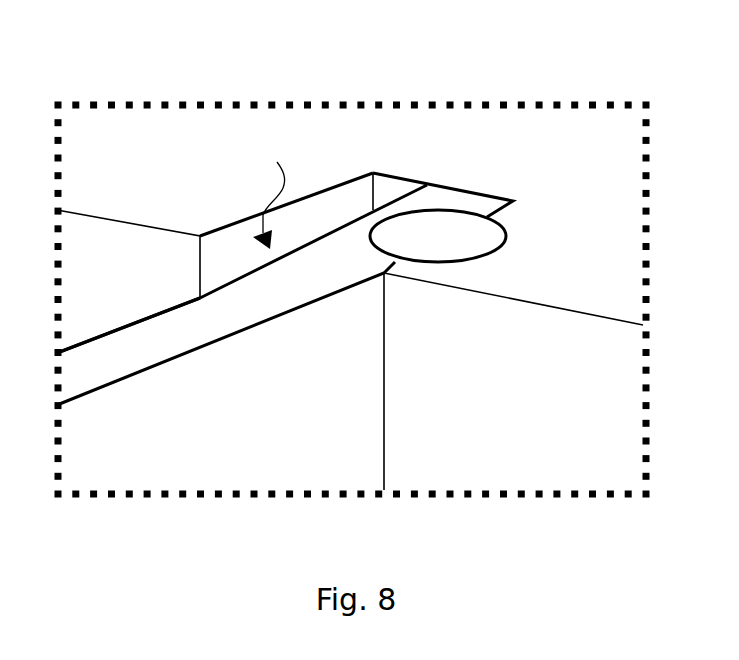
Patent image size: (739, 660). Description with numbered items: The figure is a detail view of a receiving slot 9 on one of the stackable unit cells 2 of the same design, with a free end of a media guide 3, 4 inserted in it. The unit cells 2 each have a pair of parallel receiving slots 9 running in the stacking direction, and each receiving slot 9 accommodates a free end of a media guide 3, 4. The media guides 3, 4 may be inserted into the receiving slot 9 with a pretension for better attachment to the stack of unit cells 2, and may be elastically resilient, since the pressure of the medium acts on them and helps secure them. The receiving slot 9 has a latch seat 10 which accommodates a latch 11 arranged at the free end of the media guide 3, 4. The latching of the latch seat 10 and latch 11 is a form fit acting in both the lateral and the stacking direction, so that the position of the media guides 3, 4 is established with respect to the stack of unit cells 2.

The unit cell 2 is at (157, 192).
The media guide 3 is at (125, 347).
The media guide 4 is at (226, 333).
The receiving slot 9 is at (269, 193).
The latch seat 10 is at (507, 235).
The latch 11 is at (438, 240).